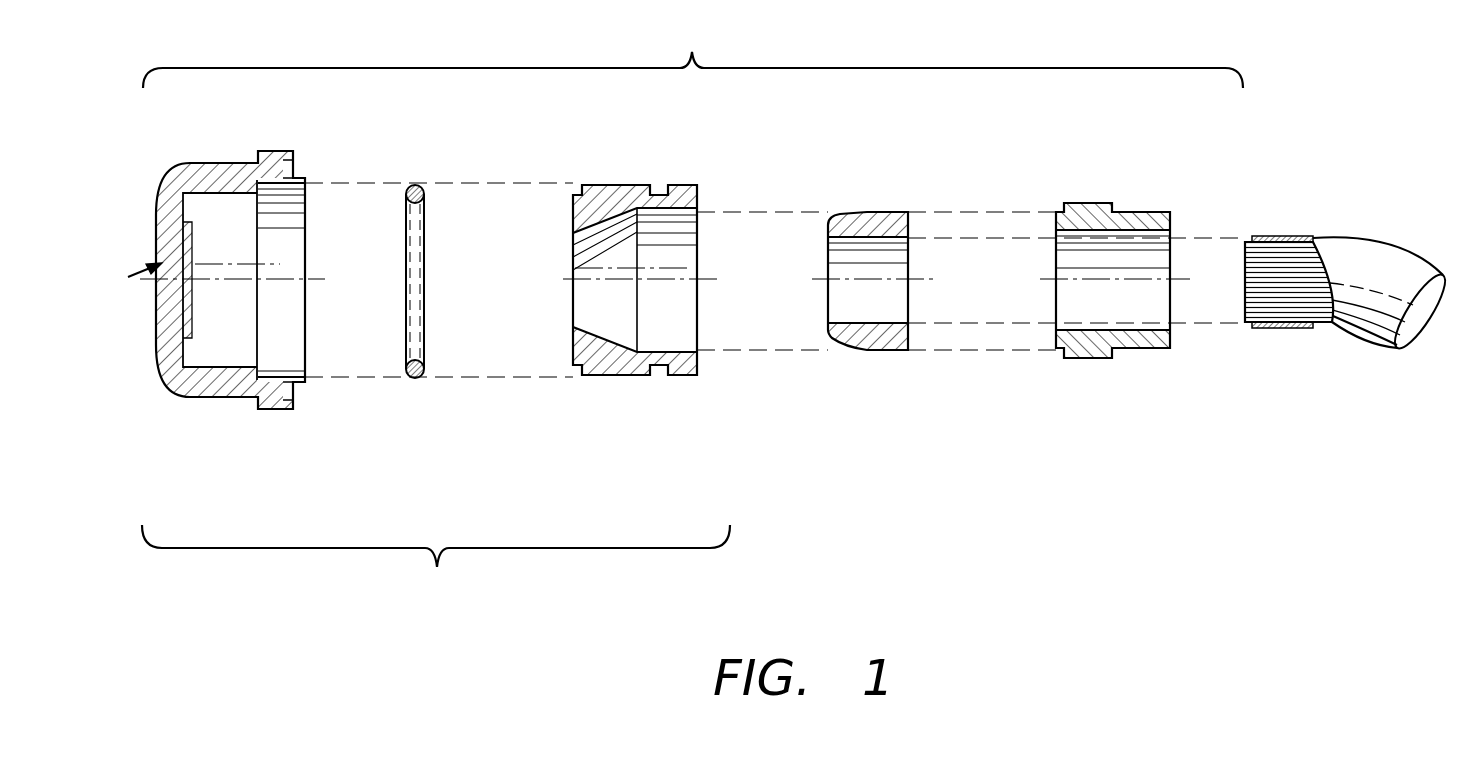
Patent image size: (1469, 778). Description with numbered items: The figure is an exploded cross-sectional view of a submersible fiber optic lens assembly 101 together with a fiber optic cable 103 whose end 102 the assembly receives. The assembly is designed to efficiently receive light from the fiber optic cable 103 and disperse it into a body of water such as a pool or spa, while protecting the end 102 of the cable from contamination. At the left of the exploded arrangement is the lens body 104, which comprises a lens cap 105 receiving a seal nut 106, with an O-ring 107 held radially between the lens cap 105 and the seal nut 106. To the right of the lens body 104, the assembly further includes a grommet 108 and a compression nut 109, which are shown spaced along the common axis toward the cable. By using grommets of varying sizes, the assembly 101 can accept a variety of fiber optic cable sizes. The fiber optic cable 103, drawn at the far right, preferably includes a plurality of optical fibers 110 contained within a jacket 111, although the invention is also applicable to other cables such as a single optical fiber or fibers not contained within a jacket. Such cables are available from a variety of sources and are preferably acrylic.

The submersible fiber optic lens assembly 101 is at (693, 54).
The end of fiber optic cable 102 is at (1245, 291).
The fiber optic cable 103 is at (1423, 285).
The lens body 104 is at (436, 563).
The lens cap 105 is at (217, 325).
The seal nut 106 is at (678, 252).
The O-ring 107 is at (417, 237).
The grommet 108 is at (857, 297).
The compression nut 109 is at (1082, 260).
The optical fibers 110 is at (1277, 258).
The jacket 111 is at (1362, 250).